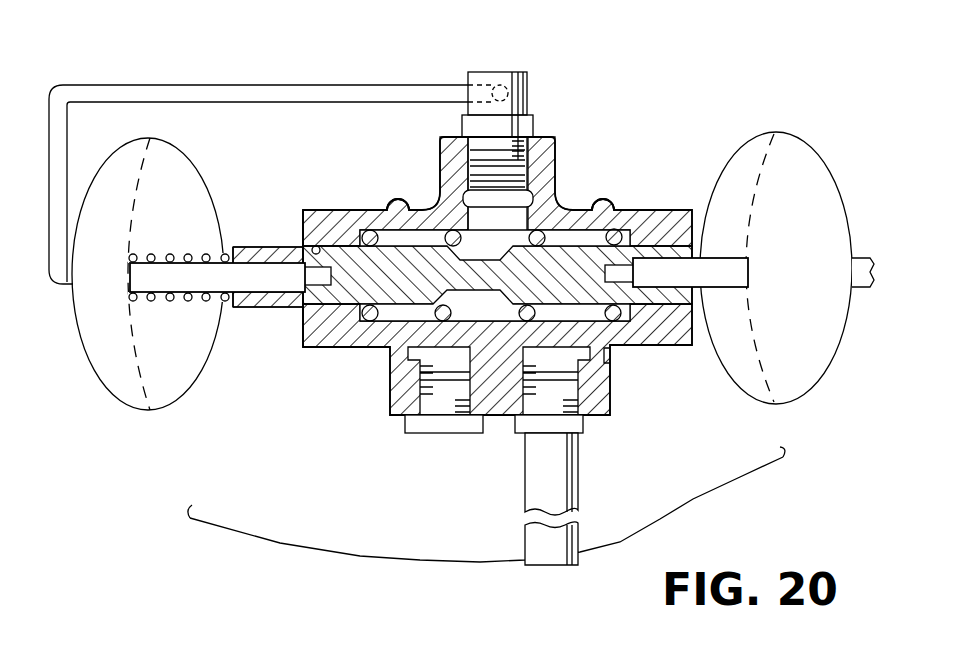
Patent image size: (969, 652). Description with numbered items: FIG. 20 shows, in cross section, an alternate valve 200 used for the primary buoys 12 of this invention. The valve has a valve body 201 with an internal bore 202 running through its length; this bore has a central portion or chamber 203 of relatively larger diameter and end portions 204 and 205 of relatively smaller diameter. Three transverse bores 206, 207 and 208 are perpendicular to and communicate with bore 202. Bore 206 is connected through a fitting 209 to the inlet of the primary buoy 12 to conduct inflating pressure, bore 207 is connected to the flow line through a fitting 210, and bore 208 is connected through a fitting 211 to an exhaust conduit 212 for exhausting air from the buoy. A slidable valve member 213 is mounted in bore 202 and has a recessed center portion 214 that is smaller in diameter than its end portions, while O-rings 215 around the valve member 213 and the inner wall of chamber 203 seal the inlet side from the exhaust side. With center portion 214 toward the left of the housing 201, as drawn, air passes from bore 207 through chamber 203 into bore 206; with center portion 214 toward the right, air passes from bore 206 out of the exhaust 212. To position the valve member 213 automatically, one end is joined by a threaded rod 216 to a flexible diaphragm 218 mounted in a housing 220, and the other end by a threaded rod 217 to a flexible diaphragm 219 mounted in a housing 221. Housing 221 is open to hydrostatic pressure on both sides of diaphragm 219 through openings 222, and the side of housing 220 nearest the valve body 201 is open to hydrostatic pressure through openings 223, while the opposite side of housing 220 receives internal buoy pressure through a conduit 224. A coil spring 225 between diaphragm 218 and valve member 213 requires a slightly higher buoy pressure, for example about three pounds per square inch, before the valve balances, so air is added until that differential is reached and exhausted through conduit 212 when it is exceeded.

The primary buoy 12 is at (740, 482).
The valve 200 is at (622, 160).
The valve body 201 is at (652, 216).
The internal bore 202 is at (590, 313).
The central portion or chamber 203 is at (428, 230).
The end portion 204 is at (311, 246).
The end portion 205 is at (684, 344).
The transverse bore 206 is at (500, 178).
The transverse bore 207 is at (430, 372).
The transverse bore 208 is at (604, 407).
The fitting 209 is at (528, 95).
The fitting 210 is at (438, 426).
The fitting 211 is at (584, 426).
The exhaust conduit 212 is at (540, 482).
The slidable valve member 213 is at (553, 275).
The recessed center portion 214 is at (393, 206).
The O-rings 215 is at (462, 167).
The threaded rod 216 is at (258, 276).
The threaded rod 217 is at (742, 280).
The flexible diaphragm 218 is at (143, 163).
The flexible diaphragm 219 is at (757, 209).
The housing 220 is at (198, 165).
The housing 221 is at (836, 356).
The openings 222 is at (722, 171).
The openings 223 is at (210, 188).
The conduit 224 is at (262, 90).
The coil spring 225 is at (145, 320).